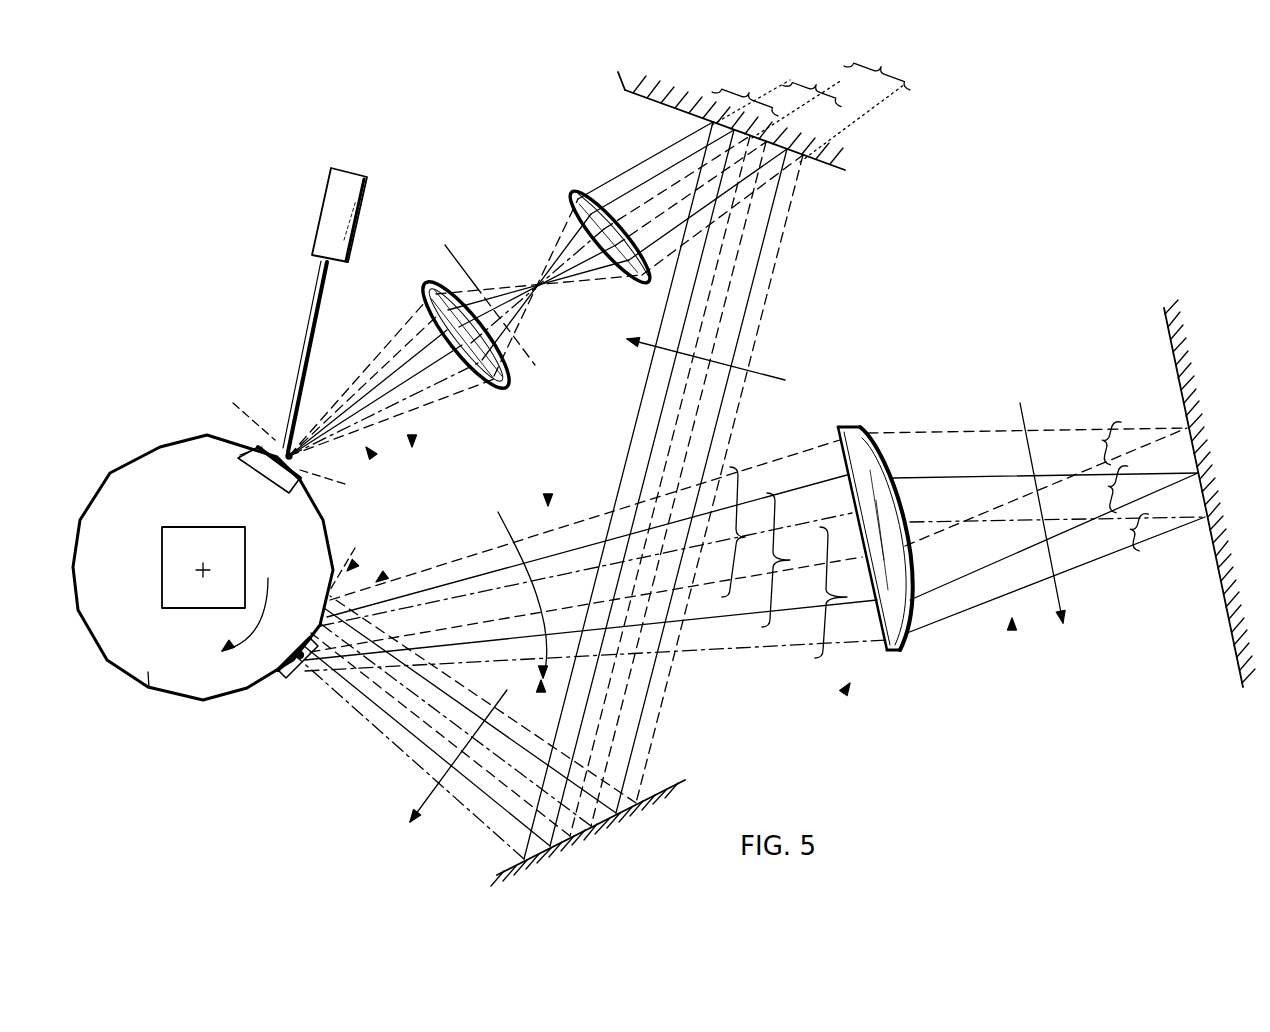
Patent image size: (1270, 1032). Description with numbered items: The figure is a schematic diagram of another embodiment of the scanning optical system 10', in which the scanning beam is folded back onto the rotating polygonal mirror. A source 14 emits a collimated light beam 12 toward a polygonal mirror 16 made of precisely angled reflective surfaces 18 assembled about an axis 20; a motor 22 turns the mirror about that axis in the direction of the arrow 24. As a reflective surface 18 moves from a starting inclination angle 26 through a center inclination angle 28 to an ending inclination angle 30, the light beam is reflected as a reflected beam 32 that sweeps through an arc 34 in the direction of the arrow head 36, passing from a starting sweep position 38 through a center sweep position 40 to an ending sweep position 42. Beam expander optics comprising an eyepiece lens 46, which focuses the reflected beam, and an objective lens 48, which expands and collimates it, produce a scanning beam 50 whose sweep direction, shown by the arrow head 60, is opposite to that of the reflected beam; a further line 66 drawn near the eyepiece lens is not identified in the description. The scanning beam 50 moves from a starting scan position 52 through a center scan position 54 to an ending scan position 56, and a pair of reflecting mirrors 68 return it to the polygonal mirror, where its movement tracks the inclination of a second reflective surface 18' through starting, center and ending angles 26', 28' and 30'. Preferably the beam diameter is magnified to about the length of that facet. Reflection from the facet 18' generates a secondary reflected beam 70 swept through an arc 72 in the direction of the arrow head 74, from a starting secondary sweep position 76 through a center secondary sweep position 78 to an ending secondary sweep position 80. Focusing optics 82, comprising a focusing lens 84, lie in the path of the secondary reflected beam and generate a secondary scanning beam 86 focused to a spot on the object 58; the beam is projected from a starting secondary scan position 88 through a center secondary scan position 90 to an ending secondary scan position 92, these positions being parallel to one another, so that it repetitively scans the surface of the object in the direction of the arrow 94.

The scanning optical system 10' is at (133, 310).
The collimated light beam 12 is at (316, 322).
The source 14 is at (331, 208).
The polygonal mirror 16 is at (149, 688).
The reflective surface 18 is at (265, 481).
The reflective surface 18' is at (298, 627).
The axis 20 is at (208, 568).
The motor 22 is at (187, 590).
The arrow 24 is at (252, 602).
The starting inclination angle 26 is at (218, 469).
The starting angle 26' is at (365, 554).
The center inclination angle 28 is at (277, 426).
The center angle 28' is at (252, 667).
The ending inclination angle 30 is at (249, 394).
The ending angle 30' is at (410, 557).
The reflected beam 32 is at (366, 447).
The arc 34 is at (362, 352).
The arrow head 36 is at (418, 450).
The starting sweep position 38 is at (425, 305).
The center sweep position 40 is at (412, 447).
The ending sweep position 42 is at (455, 395).
The eyepiece lens 46 is at (500, 384).
The objective lens 48 is at (582, 200).
The scanning beam 50 is at (625, 162).
The starting scan position 52 is at (857, 108).
The center scan position 54 is at (798, 99).
The ending scan position 56 is at (751, 96).
The object 58 is at (1228, 640).
The arrow head 60 is at (781, 378).
The aperture plane 66 is at (460, 265).
The reflecting mirrors 68 is at (625, 90).
The secondary reflected beam 70 is at (548, 494).
The arc 72 is at (522, 579).
The arrow head 74 is at (541, 692).
The starting secondary sweep position 76 is at (596, 555).
The center secondary sweep position 78 is at (793, 560).
The ending secondary sweep position 80 is at (840, 592).
The focusing optics 82 is at (850, 683).
The focusing lens 84 is at (905, 645).
The secondary scanning beam 86 is at (1012, 630).
The starting secondary scan position 88 is at (1027, 482).
The center secondary scan position 90 is at (1045, 531).
The ending secondary scan position 92 is at (1056, 572).
The arrow 94 is at (1024, 412).